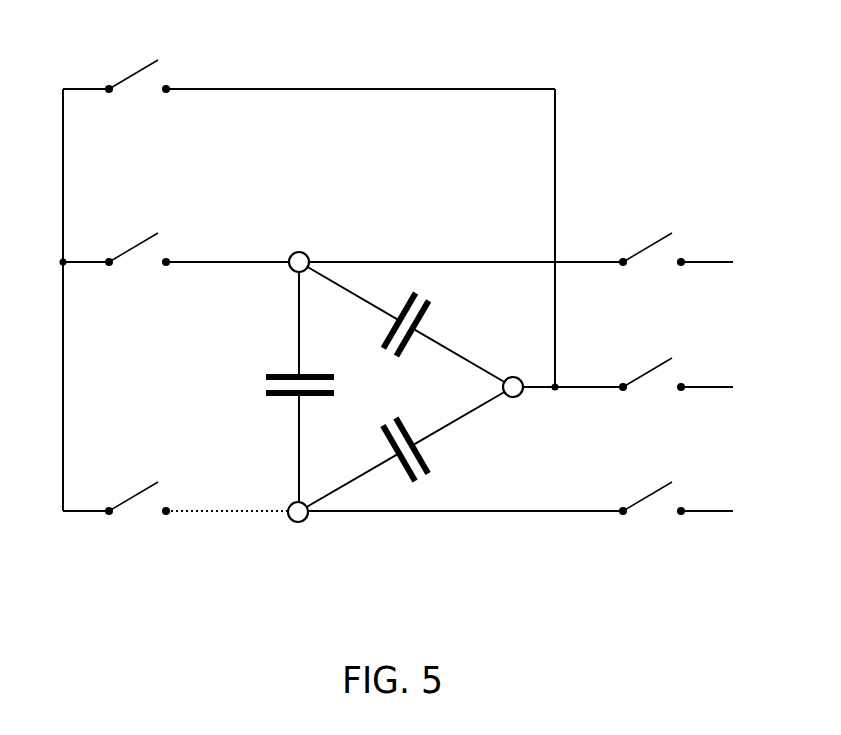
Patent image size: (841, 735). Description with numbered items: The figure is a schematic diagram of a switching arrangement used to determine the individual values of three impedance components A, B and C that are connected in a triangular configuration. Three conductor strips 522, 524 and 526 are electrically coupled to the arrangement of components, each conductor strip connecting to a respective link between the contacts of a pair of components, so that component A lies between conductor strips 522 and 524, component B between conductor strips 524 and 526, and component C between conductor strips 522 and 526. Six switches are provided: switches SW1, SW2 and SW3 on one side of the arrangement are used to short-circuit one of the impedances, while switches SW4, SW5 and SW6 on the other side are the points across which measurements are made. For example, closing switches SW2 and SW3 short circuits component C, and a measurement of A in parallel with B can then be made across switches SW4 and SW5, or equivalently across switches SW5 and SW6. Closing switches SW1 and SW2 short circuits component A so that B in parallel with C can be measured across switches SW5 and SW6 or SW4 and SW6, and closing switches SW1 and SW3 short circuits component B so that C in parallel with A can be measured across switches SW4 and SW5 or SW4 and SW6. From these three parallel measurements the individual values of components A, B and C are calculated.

The conductor strip 522 is at (323, 247).
The conductor strip 524 is at (524, 367).
The conductor strip 526 is at (319, 527).
The switch SW1 is at (147, 49).
The switch SW2 is at (147, 222).
The switch SW3 is at (147, 471).
The switch SW4 is at (661, 223).
The switch SW5 is at (661, 349).
The switch SW6 is at (661, 473).
The component A is at (427, 324).
The component B is at (429, 452).
The component C is at (288, 358).